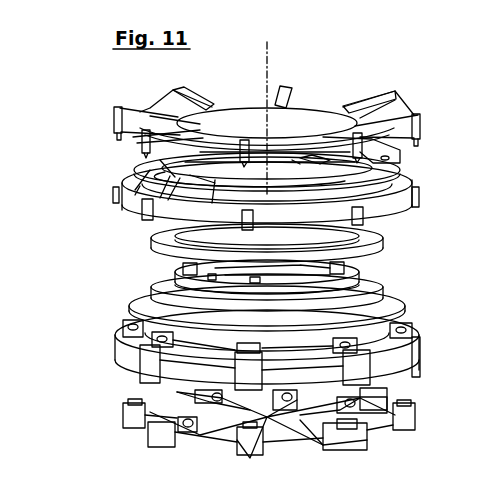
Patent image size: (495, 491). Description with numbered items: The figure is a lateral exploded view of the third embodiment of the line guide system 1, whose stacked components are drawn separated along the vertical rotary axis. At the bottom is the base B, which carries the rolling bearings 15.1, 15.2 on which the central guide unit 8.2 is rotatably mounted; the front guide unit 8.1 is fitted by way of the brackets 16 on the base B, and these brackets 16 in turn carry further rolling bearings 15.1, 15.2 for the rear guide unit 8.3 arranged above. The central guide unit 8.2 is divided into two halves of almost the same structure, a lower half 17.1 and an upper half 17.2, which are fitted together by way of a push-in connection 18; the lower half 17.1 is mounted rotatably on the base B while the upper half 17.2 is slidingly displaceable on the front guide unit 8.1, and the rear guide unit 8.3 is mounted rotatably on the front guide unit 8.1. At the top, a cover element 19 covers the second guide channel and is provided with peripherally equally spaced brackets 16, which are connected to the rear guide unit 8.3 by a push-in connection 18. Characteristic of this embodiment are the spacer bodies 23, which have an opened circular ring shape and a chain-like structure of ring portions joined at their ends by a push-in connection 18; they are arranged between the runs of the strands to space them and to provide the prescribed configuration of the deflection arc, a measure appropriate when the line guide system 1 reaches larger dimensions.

The line guide system 1 is at (380, 72).
The cover element 19 is at (118, 111).
The brackets 16 is at (353, 108).
The push-in connection 18 is at (418, 187).
The spacer body 23 is at (143, 160).
The rear guide unit 8.3 is at (119, 184).
The central guide unit 8.2 is at (134, 262).
The upper half 17.2 is at (383, 235).
The lower half 17.1 is at (382, 282).
The front guide unit 8.1 is at (108, 333).
The rolling bearing 15.1 is at (342, 400).
The rolling bearing 15.2 is at (190, 428).
The base B is at (388, 428).